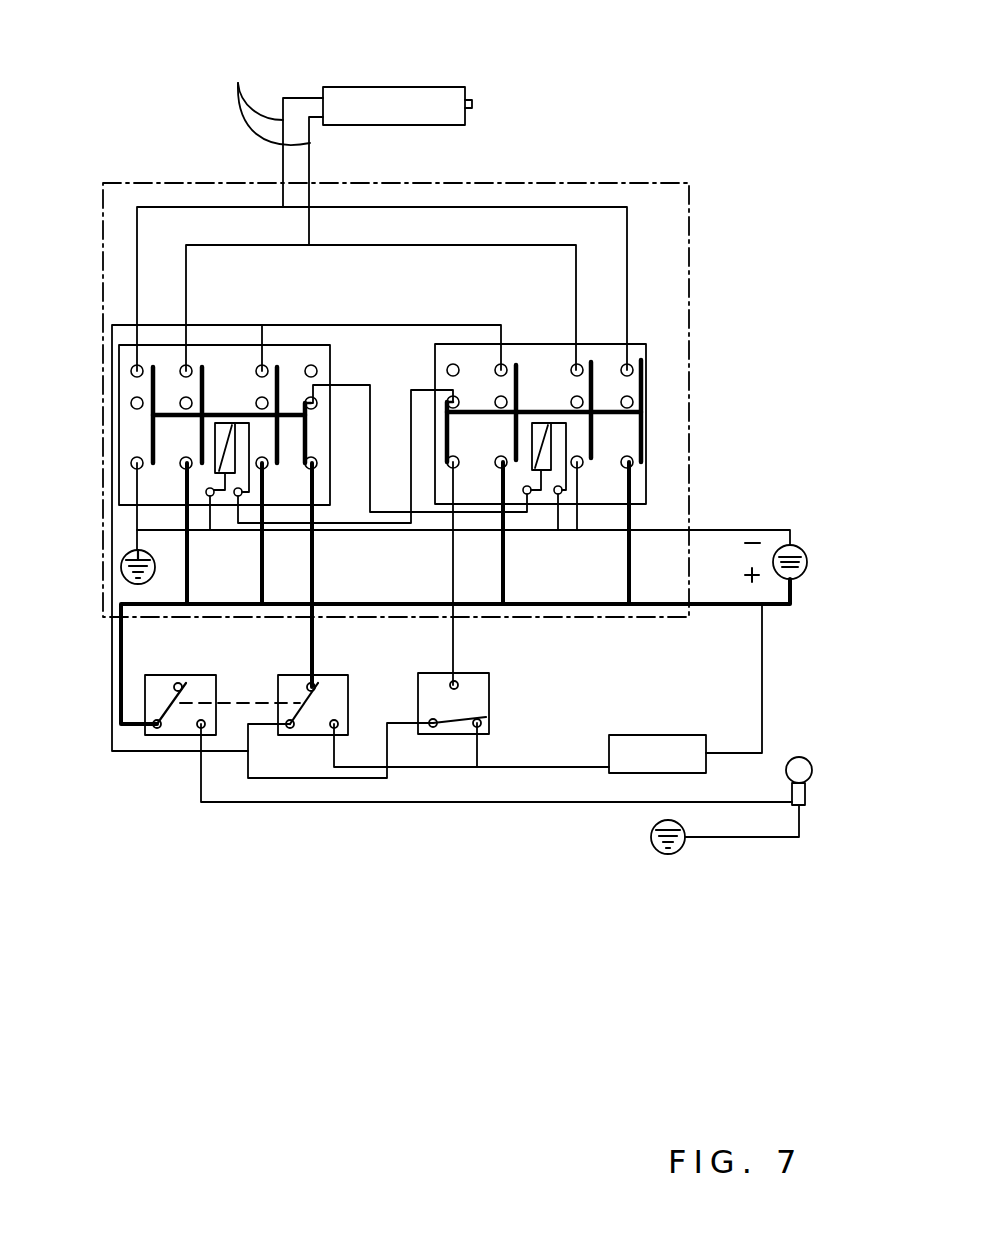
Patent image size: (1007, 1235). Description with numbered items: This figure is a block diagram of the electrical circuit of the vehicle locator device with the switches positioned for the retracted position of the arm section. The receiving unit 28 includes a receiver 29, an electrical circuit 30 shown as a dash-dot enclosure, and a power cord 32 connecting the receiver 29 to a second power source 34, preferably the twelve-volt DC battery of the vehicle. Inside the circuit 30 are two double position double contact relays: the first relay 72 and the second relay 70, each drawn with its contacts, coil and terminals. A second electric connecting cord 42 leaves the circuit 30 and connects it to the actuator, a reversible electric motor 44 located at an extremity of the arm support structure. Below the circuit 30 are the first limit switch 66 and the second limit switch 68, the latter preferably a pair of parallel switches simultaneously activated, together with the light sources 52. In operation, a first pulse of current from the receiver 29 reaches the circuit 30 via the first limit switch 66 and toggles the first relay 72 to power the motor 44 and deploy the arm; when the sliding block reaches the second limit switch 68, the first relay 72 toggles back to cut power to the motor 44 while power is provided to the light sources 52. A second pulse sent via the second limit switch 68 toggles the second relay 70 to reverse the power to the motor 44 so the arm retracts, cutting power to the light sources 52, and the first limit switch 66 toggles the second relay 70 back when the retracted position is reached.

The receiving unit 28 is at (118, 158).
The electrical circuit 30 is at (651, 182).
The second electric connecting cord 42 is at (271, 146).
The reversible electric motor 44 is at (378, 87).
The second double position double contact (2P2T) relay 70 is at (330, 362).
The first double position double contact (2P2T) relay 72 is at (518, 343).
The second power source 34 is at (808, 555).
The second limit switch 68 is at (282, 673).
The first limit switch 66 is at (477, 673).
The receiver 29 is at (642, 735).
The power cord 32 is at (762, 656).
The light sources 52 is at (812, 771).